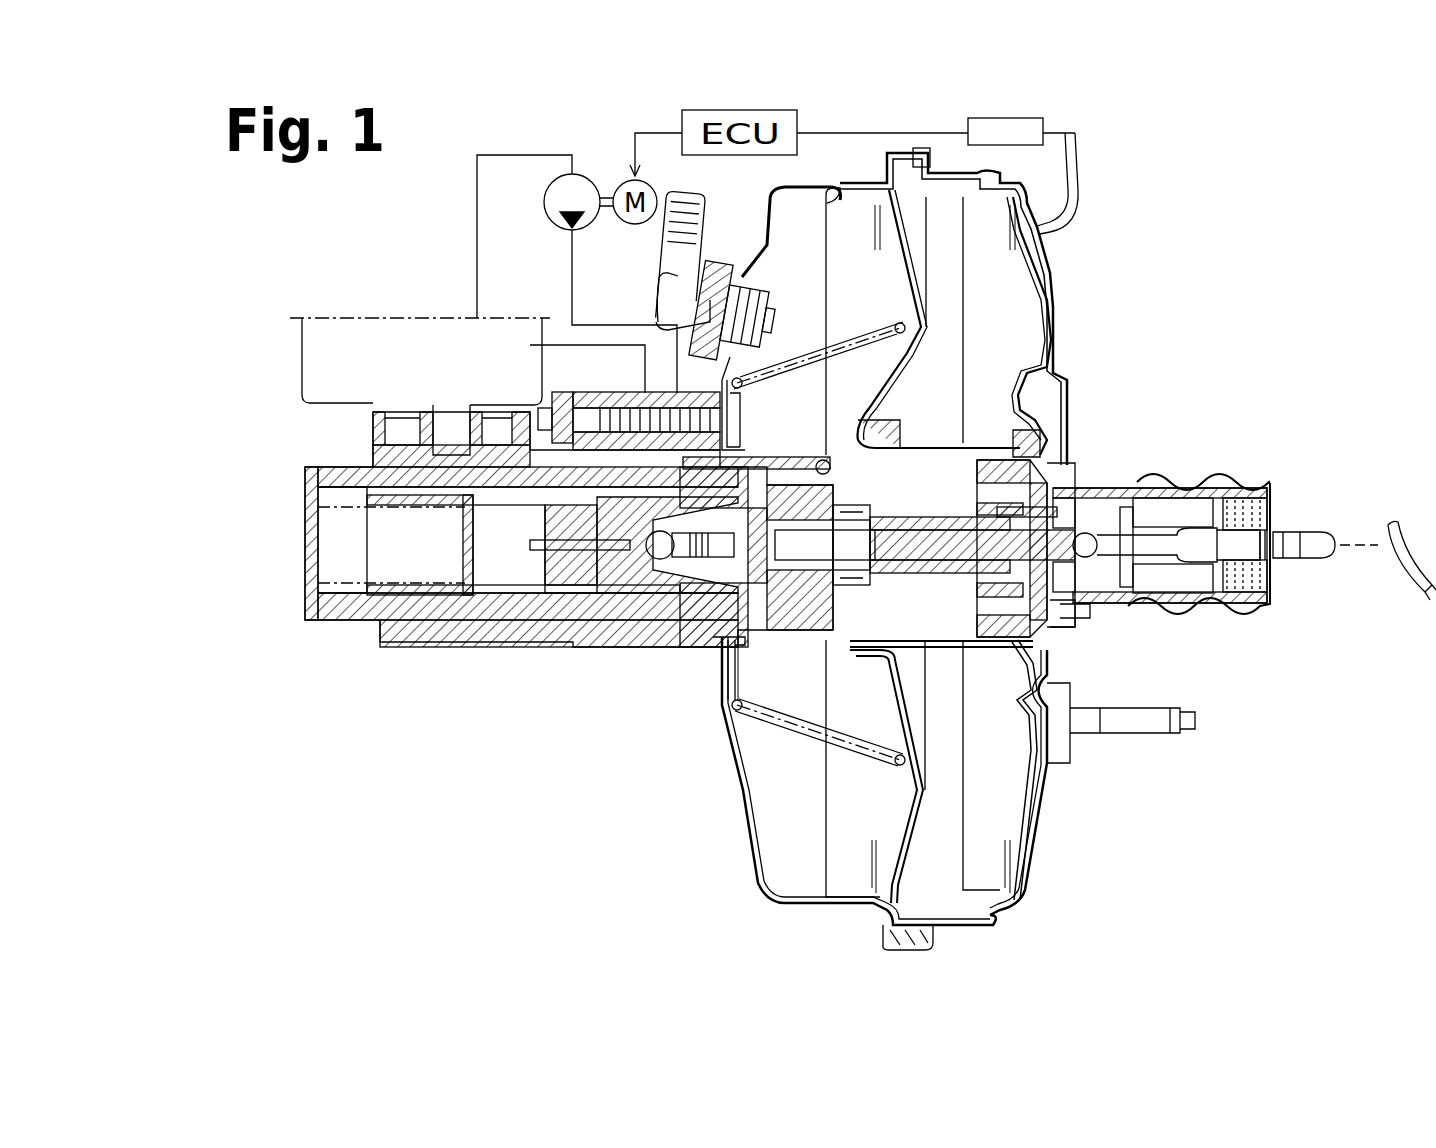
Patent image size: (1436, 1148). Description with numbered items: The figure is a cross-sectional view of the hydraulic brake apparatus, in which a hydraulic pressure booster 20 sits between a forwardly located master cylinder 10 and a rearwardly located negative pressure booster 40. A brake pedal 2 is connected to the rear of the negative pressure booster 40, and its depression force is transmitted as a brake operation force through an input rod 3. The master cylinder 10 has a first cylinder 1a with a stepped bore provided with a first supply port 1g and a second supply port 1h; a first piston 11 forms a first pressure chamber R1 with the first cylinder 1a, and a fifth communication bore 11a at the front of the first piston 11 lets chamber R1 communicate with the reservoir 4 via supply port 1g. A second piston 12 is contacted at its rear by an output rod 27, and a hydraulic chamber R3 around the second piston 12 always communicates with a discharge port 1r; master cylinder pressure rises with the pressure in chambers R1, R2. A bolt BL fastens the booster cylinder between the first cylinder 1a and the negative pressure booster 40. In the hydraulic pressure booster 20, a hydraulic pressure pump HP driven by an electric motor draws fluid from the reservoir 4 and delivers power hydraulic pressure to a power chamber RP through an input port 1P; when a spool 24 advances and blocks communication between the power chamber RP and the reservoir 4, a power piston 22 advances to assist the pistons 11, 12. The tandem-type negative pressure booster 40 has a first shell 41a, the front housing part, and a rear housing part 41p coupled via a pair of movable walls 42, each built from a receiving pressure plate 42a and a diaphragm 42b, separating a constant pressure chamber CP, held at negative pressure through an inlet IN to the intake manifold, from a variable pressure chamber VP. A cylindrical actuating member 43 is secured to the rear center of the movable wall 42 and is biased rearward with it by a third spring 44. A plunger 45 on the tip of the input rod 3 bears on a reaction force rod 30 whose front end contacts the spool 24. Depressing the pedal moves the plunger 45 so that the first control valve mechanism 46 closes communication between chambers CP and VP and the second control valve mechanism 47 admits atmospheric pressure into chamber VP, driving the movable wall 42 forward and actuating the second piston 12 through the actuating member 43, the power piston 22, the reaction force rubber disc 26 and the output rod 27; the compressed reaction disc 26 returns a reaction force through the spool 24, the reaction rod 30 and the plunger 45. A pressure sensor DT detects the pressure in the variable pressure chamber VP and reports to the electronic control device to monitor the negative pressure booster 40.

The reservoir 4 is at (352, 338).
The second supply port 1h is at (467, 405).
The first supply port 1g is at (397, 450).
The bolt BL is at (562, 400).
The discharge port 1r is at (623, 440).
The hydraulic pressure pump HP is at (547, 200).
The inlet IN is at (682, 257).
The pressure sensor DT is at (1020, 140).
The first shell 41a is at (815, 178).
The fifth communication bore 11a is at (747, 272).
The input port 1P is at (768, 472).
The power piston 22 is at (950, 520).
The spool 24 is at (855, 535).
The reaction force rod 30 is at (935, 555).
The negative pressure booster 40 is at (1052, 265).
The rear shell plate 41p is at (1062, 308).
The variable pressure chamber VP is at (1050, 390).
The plunger 45 is at (1082, 525).
The first control valve mechanism 46 is at (1136, 500).
The second control valve mechanism 47 is at (1155, 485).
The input rod 3 is at (1313, 556).
The brake pedal 2 is at (1402, 580).
The actuating member 43 is at (1067, 608).
The movable wall 42 is at (1047, 757).
The receiving pressure plate 42a is at (893, 810).
The diaphragm 42b is at (843, 877).
The constant pressure chamber CP is at (777, 812).
The third spring 44 is at (807, 735).
The power chamber RP is at (800, 640).
The hydraulic pressure booster 20 is at (680, 575).
The output rod 27 is at (692, 600).
The reaction force rubber disc 26 is at (703, 636).
The second piston 12 is at (565, 600).
The hydraulic chamber R3 is at (600, 620).
The second pressure chamber R2 is at (513, 558).
The master cylinder 10 is at (452, 644).
The first piston 11 is at (432, 573).
The first cylinder 1a is at (362, 615).
The first pressure chamber R1 is at (348, 568).